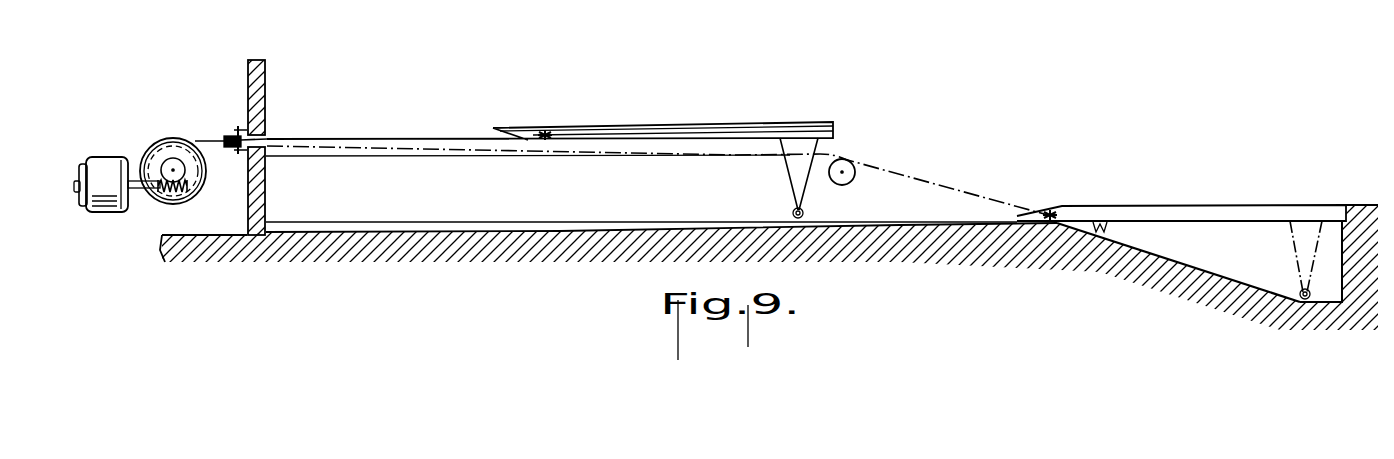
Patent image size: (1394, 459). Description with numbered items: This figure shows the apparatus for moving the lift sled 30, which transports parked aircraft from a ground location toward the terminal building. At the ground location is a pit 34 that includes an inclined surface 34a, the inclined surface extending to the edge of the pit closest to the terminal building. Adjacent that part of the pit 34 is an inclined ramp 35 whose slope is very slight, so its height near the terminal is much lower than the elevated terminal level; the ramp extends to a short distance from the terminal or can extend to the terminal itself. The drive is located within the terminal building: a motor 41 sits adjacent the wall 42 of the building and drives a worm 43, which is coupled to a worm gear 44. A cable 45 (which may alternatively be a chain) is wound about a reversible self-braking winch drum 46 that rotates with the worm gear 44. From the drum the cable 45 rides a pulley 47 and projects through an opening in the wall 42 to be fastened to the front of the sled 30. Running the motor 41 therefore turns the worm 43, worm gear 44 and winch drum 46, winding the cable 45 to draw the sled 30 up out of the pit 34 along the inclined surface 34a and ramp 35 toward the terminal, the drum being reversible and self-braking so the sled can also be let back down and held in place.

The lift sled 30 is at (833, 123).
The pit 34 is at (1330, 286).
The inclined surface 34a is at (1236, 283).
The inclined ramp 35 is at (530, 223).
The motor 41 is at (104, 213).
The wall 42 is at (262, 81).
The worm 43 is at (184, 196).
The worm gear 44 is at (186, 171).
The cable 45 is at (197, 139).
The winch drum 46 is at (157, 141).
The pulley 47 is at (237, 126).